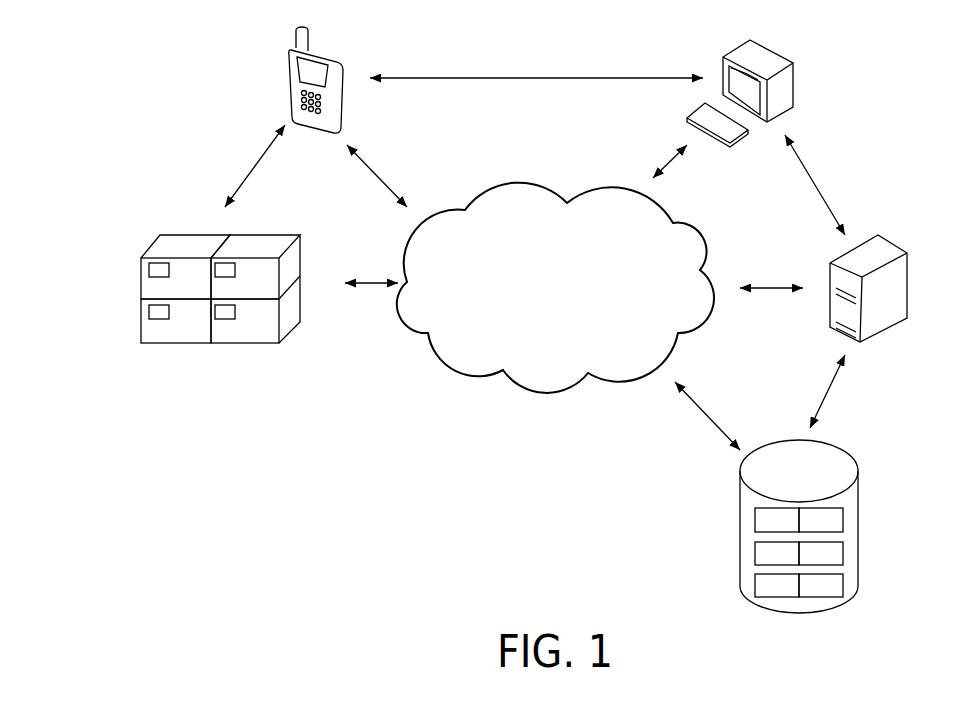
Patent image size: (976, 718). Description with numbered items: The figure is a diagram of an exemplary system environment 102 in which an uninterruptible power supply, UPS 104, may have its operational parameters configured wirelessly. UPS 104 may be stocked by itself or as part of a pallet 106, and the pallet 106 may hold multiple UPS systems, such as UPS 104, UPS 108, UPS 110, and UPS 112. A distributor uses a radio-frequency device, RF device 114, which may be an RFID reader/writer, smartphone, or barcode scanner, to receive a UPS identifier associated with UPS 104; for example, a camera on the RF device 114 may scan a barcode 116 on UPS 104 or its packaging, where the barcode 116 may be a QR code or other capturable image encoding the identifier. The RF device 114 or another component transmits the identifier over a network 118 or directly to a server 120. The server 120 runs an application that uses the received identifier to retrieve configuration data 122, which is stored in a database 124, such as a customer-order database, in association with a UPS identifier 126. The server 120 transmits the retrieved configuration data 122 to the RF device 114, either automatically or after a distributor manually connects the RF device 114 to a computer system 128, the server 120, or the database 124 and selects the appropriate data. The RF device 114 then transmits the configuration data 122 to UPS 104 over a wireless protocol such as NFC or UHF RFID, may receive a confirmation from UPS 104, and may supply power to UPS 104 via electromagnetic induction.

The system environment 102 is at (368, 423).
The UPS 104 is at (274, 251).
The pallet 106 is at (181, 276).
The UPS 108 is at (301, 318).
The UPS 110 is at (140, 283).
The UPS 112 is at (140, 330).
The RF device 114 is at (346, 66).
The barcode 116 is at (237, 270).
The network 118 is at (709, 253).
The server 120 is at (909, 263).
The configuration data 122 is at (846, 553).
The database 124 is at (804, 526).
The UPS identifier 126 is at (757, 553).
The computer system 128 is at (796, 78).